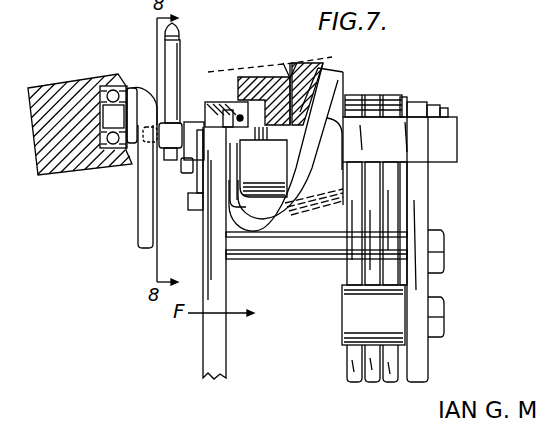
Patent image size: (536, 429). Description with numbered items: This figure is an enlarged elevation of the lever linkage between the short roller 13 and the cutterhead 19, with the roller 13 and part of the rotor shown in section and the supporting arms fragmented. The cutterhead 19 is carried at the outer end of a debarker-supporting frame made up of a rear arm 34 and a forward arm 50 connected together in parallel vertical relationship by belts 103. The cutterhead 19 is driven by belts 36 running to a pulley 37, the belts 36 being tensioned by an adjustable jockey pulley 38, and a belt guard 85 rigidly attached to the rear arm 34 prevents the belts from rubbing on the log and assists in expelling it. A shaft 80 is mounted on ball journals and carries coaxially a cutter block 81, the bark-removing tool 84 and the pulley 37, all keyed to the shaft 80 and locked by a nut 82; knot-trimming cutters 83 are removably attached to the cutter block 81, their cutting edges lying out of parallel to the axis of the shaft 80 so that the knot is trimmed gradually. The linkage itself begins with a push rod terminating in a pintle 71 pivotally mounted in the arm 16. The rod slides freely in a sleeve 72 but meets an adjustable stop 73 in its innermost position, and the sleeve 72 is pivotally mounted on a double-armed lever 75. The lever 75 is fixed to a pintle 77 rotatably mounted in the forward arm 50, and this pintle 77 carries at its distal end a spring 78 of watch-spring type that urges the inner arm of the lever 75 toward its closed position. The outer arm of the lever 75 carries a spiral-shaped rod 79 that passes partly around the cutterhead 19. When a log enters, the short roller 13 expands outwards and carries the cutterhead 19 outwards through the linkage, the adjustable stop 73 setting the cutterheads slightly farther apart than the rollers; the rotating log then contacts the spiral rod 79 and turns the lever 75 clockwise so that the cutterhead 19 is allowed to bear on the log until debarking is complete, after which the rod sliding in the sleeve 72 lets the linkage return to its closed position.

The short roller 13 is at (72, 84).
The arm 16 is at (138, 220).
The rotary cutterhead 19 is at (347, 71).
The rear arm 34 is at (430, 273).
The belts 36 is at (398, 94).
The pulley 37 is at (404, 97).
The adjustable jockey pulley 38 is at (342, 328).
The forward arm 50 is at (203, 336).
The pintle 71 is at (170, 161).
The sleeve 72 is at (182, 53).
The adjustable stop 73 is at (181, 30).
The double-armed lever 75 is at (190, 122).
The pintle 77 is at (211, 110).
The spring 78 is at (226, 110).
The spiral-shaped rod 79 is at (282, 211).
The shaft 80 is at (287, 79).
The cutter block 81 is at (252, 80).
The nut 82 is at (270, 100).
The knot-trimming cutters 83 is at (240, 207).
The bark-removing tool 84 is at (320, 68).
The belt guard 85 is at (457, 117).
The belts 103 is at (270, 250).